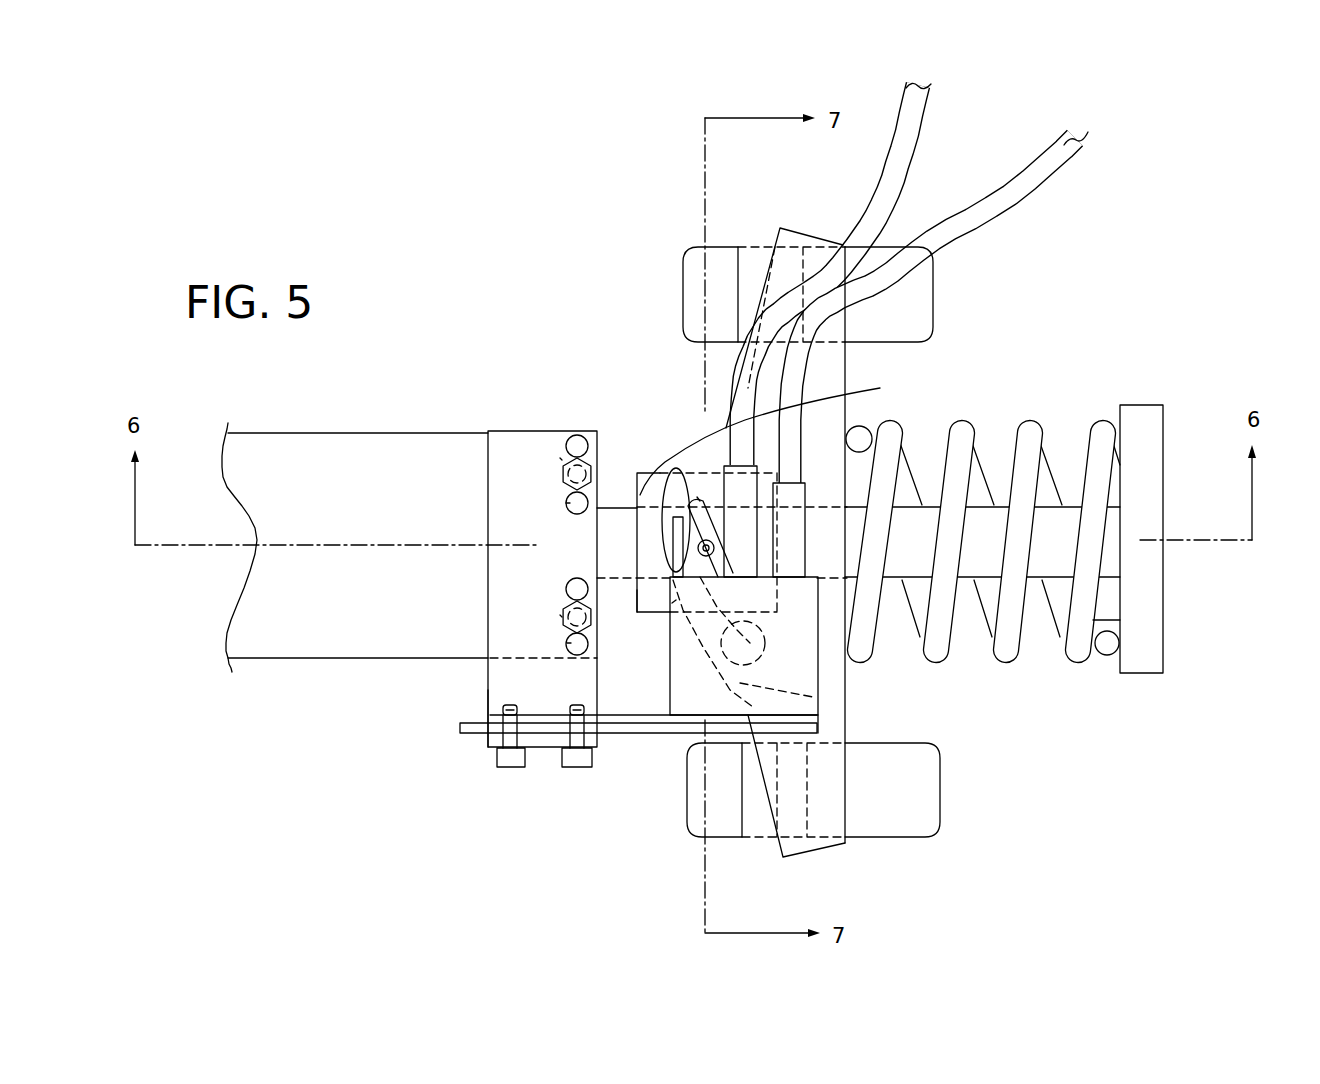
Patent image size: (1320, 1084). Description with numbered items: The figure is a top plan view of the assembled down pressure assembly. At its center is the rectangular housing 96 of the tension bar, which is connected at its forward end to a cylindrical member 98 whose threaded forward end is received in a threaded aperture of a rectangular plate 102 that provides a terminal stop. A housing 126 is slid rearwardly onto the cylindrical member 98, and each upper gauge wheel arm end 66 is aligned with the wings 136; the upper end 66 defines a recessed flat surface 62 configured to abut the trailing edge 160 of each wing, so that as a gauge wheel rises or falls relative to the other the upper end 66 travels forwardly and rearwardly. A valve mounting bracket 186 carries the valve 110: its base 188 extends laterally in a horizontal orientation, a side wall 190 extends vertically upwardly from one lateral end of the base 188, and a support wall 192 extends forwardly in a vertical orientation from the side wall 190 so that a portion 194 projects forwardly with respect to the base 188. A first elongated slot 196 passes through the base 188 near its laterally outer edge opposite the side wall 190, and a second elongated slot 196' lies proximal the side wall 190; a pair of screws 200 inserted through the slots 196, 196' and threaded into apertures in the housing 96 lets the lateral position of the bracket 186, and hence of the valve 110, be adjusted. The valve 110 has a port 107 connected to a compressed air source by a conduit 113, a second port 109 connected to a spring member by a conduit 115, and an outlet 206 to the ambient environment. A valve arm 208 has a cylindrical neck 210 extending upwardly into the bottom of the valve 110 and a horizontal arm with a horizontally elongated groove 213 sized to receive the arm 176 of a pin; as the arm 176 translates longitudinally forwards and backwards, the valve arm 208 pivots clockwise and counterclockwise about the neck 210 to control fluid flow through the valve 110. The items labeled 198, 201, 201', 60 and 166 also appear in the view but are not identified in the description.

The housing 96 is at (356, 504).
The base 188 is at (488, 460).
The first elongated slot 196 is at (528, 419).
The second elongated slot 196' is at (479, 626).
The washer 198 is at (587, 432).
The screws 200 is at (558, 477).
The lock washer 201 is at (533, 507).
The lock washer 201' is at (541, 646).
The cylindrical member 98 is at (607, 507).
The port 107 is at (703, 392).
The second port 109 is at (808, 484).
The outlet 206 is at (670, 473).
The arm 176 is at (697, 497).
The wings 136 is at (855, 363).
The spring 166 is at (965, 425).
The rectangular plate 102 is at (1160, 405).
The trailing edge 160 is at (738, 293).
The upper end of gauge wheel arm 66 is at (718, 247).
The flat surface 62 is at (742, 283).
The clamp block 60 is at (915, 247).
The conduit 113 is at (918, 138).
The conduit 115 is at (1047, 193).
The valve mounting bracket 186 is at (478, 683).
The side wall 190 is at (487, 748).
The support wall 192 is at (620, 740).
The portion of support wall 194 is at (683, 733).
The valve 110 is at (830, 670).
The housing 126 is at (628, 600).
The groove 213 is at (672, 603).
The valve arm 208 is at (683, 627).
The cylindrical neck 210 is at (763, 660).